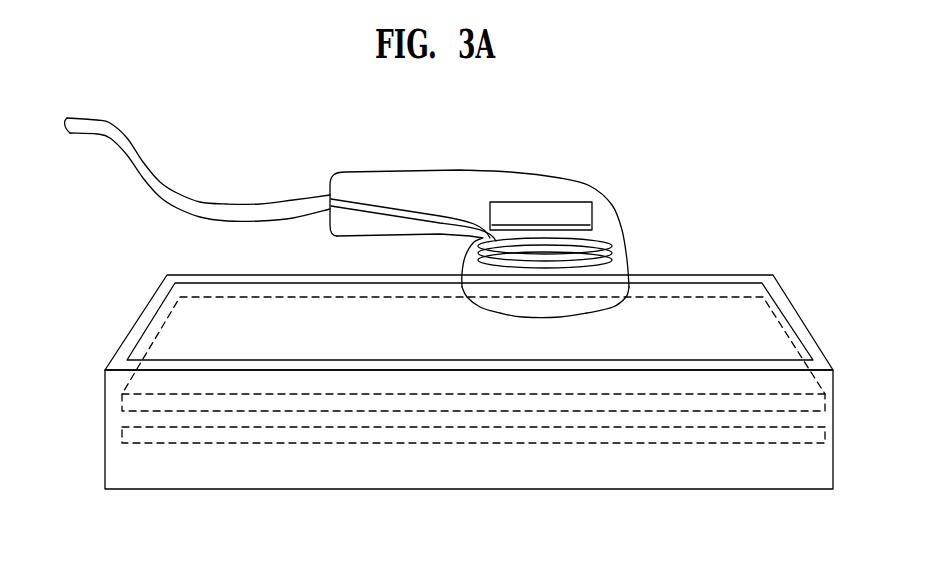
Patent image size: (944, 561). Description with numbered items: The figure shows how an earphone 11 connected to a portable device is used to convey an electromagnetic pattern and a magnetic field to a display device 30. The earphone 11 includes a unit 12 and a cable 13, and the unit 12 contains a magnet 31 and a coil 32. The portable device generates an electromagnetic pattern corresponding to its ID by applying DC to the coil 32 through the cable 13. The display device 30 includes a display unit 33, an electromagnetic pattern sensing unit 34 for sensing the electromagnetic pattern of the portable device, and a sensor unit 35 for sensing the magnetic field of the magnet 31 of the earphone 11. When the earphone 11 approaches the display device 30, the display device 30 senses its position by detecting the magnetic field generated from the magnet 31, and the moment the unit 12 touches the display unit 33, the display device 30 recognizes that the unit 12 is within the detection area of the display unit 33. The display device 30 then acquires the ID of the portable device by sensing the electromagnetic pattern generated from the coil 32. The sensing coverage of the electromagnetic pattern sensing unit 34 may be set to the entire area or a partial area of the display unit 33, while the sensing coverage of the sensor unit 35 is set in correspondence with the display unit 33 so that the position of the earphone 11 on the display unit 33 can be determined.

The earphone 11 is at (327, 193).
The unit 12 is at (458, 182).
The cable 13 is at (182, 200).
The display device 30 is at (165, 490).
The magnet 31 is at (566, 208).
The coil 32 is at (612, 252).
The display unit 33 is at (158, 298).
The electromagnetic pattern sensing unit 34 is at (400, 402).
The sensor unit 35 is at (658, 435).